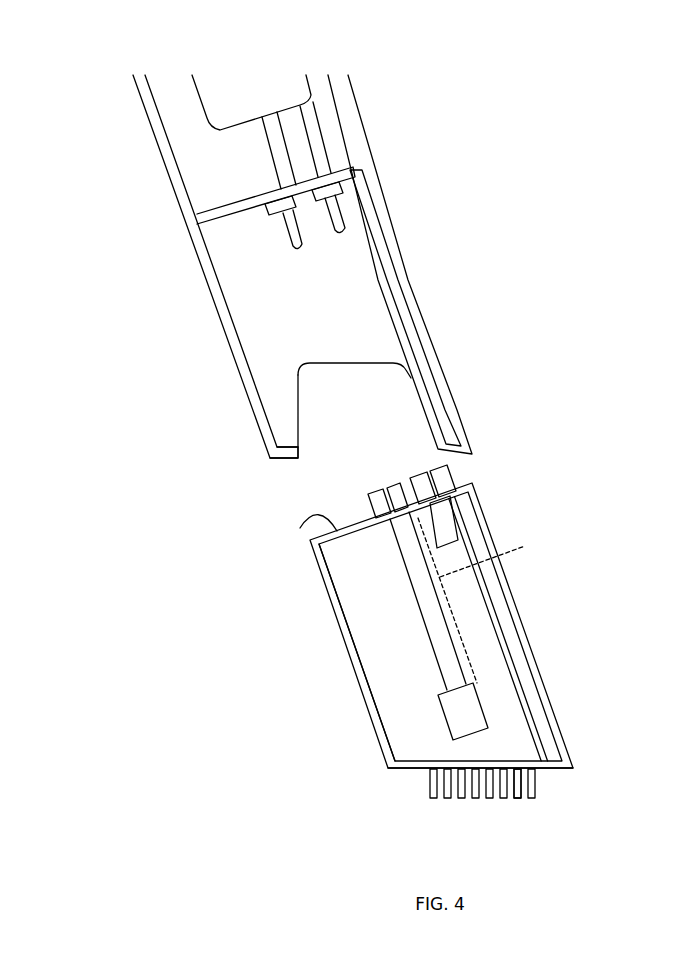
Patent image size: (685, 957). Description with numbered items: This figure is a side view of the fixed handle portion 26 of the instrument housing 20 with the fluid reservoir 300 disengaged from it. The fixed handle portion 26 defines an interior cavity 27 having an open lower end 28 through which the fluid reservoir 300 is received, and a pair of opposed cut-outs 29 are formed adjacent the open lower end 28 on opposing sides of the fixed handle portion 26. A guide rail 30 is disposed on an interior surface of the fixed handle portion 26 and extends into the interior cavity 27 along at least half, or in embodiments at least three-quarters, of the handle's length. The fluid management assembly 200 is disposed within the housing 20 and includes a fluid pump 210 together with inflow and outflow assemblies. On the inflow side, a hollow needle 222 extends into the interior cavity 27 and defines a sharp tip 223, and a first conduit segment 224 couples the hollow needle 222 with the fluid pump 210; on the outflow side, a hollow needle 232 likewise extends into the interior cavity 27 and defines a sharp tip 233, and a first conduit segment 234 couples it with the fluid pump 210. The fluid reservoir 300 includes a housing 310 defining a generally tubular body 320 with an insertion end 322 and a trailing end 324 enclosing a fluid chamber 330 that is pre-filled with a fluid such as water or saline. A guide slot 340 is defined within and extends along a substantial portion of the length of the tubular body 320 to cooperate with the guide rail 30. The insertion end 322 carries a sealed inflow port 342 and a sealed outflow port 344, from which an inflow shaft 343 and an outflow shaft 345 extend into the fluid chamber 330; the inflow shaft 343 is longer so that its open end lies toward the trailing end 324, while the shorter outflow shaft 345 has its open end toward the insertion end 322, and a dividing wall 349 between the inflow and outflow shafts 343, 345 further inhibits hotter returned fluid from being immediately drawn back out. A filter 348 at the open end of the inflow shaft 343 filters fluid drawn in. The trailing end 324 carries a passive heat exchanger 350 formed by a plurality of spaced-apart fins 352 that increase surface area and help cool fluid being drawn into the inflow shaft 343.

The housing 20 is at (352, 110).
The fixed handle portion 26 is at (178, 197).
The interior cavity 27 is at (277, 312).
The open lower end 28 is at (282, 467).
The cut-outs 29 is at (362, 395).
The guide rail 30 is at (417, 343).
The fluid management assembly 200 is at (217, 147).
The fluid pump 210 is at (265, 83).
The hollow needle 222 is at (300, 187).
The sharp tip 223 is at (302, 248).
The first conduit segment 224 is at (274, 160).
The hollow needle 232 is at (296, 225).
The sharp tip 233 is at (342, 232).
The first conduit segment 234 is at (312, 157).
The fluid reservoir 300 is at (578, 607).
The housing 310 is at (333, 608).
The tubular body 320 is at (357, 667).
The insertion end 322 is at (298, 543).
The trailing end 324 is at (403, 770).
The fluid chamber 330 is at (477, 640).
The guide slot 340 is at (537, 707).
The sealed inflow port 342 is at (397, 487).
The inflow shaft 343 is at (442, 662).
The sealed outflow port 344 is at (443, 483).
The outflow shaft 345 is at (450, 535).
The filter 348 is at (475, 720).
The dividing wall 349 is at (488, 600).
The passive heat exchanger 350 is at (425, 803).
The fins 352 is at (495, 788).